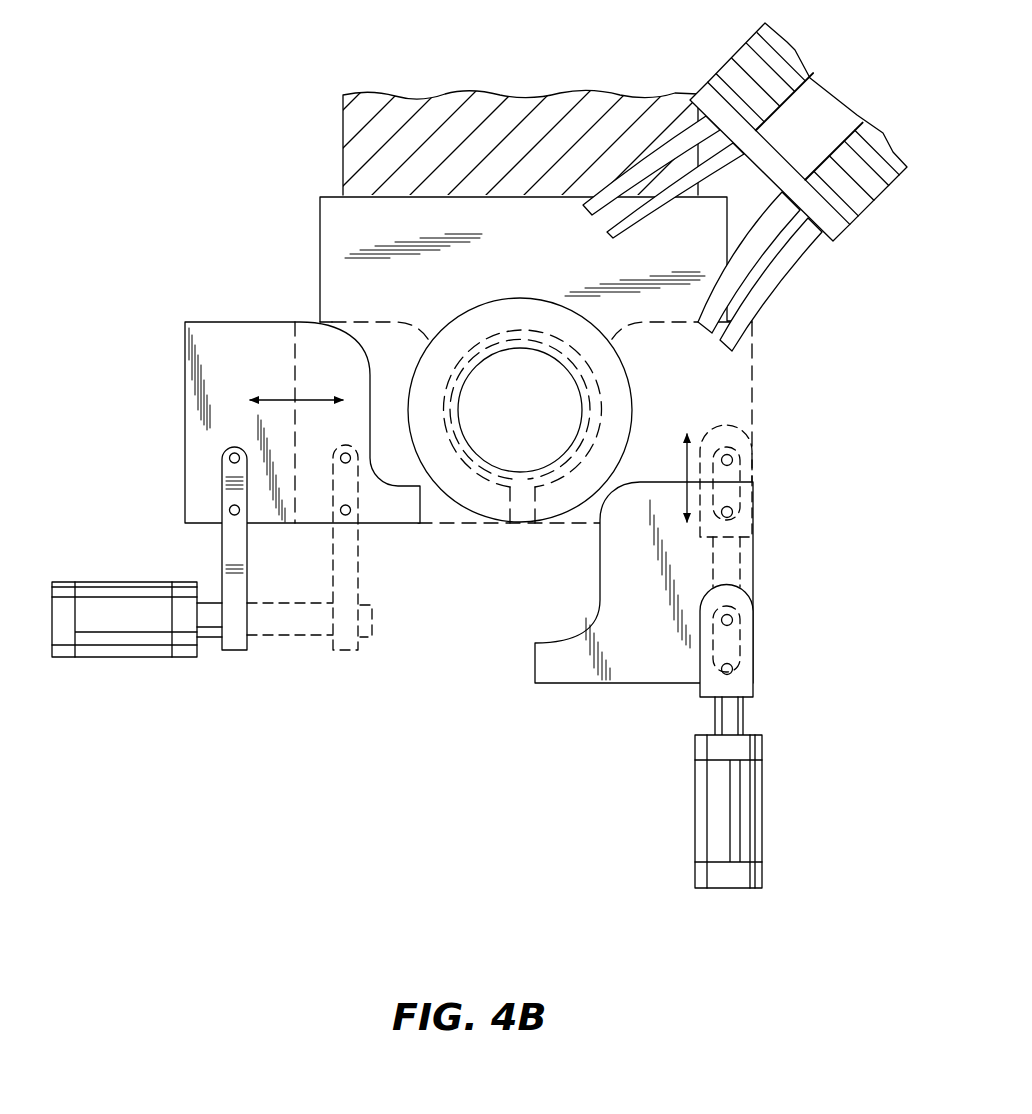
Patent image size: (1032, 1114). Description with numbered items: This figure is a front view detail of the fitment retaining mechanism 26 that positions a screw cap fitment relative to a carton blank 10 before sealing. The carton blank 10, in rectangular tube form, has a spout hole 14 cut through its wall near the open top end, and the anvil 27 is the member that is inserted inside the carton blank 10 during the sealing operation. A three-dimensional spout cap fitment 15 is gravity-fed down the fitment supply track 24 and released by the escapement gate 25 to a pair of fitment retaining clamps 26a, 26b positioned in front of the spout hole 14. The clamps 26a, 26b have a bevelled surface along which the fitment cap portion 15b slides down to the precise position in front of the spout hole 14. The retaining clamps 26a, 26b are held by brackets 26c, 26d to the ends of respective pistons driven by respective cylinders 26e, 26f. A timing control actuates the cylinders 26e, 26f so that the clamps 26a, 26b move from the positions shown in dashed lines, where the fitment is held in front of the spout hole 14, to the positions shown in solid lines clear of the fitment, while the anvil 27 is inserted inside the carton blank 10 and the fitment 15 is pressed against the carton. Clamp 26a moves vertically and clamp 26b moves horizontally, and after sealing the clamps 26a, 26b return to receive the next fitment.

The carton blank 10 is at (317, 233).
The spout hole 14 is at (470, 360).
The spout cap fitment 15 is at (517, 383).
The fitment cap portion 15b is at (517, 357).
The fitment supply track 24 is at (662, 152).
The escapement gate 25 is at (850, 226).
The fitment retaining mechanism 26 is at (461, 580).
The fitment retaining clamp 26a is at (753, 574).
The fitment retaining clamp 26b is at (274, 321).
The bracket 26c is at (753, 683).
The bracket 26d is at (228, 554).
The cylinder 26e is at (757, 843).
The cylinder 26f is at (147, 660).
The anvil 27 is at (463, 122).